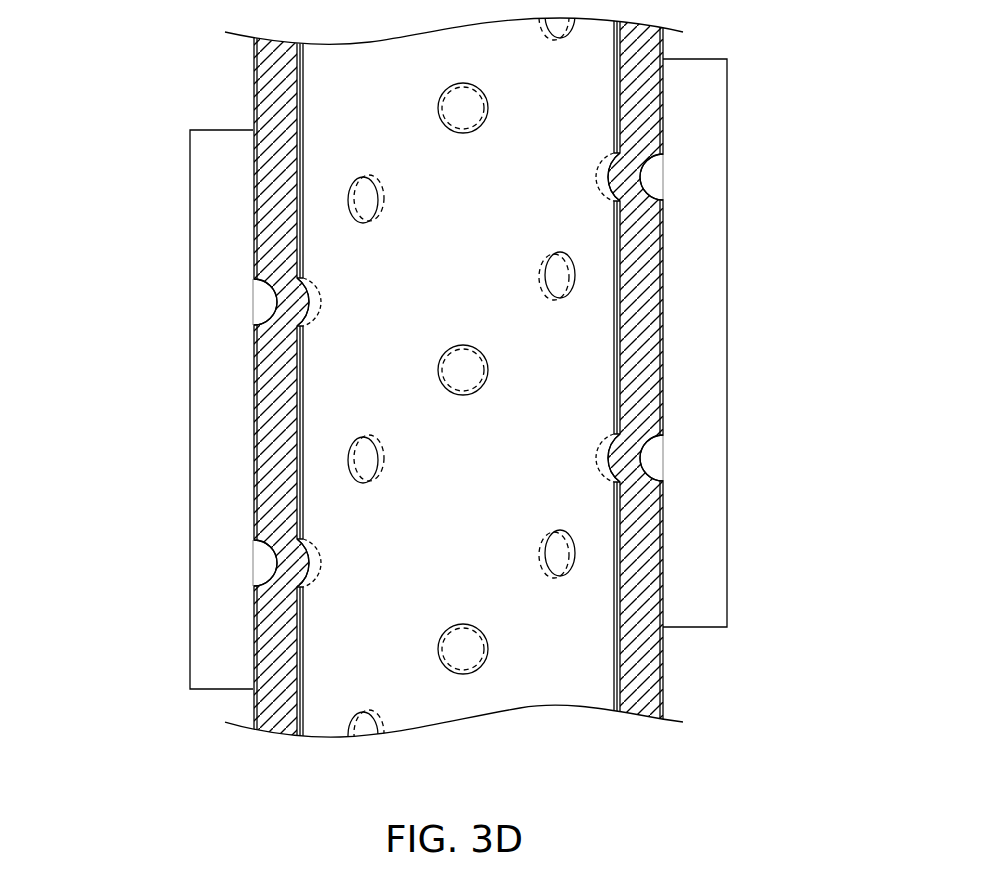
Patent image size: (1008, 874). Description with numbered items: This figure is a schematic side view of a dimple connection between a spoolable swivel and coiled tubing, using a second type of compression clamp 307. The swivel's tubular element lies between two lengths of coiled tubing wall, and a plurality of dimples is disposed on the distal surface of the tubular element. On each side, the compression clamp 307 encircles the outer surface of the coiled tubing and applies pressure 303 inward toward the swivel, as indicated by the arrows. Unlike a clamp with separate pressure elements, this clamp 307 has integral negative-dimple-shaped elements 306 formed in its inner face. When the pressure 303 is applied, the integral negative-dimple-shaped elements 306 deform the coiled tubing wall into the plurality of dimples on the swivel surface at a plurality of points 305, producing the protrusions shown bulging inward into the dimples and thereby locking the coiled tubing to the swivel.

The second type of compression clamp 307 is at (205, 160).
The pressure 303 is at (187, 224).
The plurality of points 305 is at (277, 306).
The integral negative-dimple-shaped elements 306 is at (262, 300).